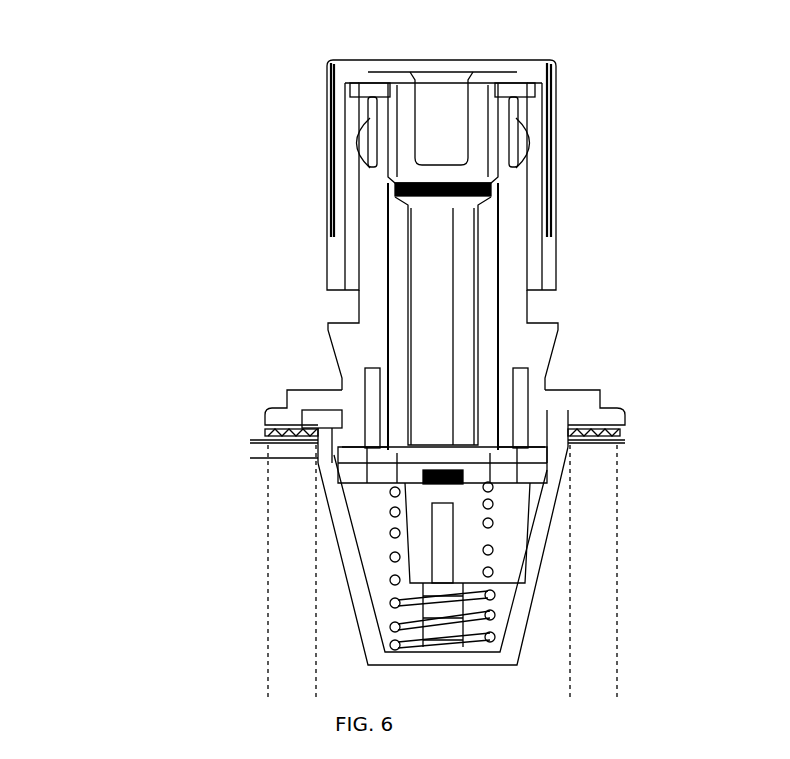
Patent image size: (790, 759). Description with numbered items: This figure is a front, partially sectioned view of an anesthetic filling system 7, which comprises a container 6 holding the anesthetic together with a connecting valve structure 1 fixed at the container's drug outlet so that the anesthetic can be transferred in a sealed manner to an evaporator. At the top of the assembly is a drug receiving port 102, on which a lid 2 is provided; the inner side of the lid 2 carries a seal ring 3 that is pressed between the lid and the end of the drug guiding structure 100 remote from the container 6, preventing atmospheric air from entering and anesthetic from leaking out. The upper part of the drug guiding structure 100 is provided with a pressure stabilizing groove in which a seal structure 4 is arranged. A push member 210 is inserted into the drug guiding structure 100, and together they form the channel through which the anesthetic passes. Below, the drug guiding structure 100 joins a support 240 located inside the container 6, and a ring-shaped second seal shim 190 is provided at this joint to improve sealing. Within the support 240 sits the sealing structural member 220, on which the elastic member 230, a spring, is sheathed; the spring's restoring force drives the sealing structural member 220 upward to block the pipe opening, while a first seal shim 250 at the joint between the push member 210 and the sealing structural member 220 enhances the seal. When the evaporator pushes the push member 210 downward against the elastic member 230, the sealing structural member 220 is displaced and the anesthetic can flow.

The connecting valve structure 1 is at (222, 395).
The lid 2 is at (352, 70).
The seal ring 3 is at (372, 92).
The seal structure 4 is at (358, 143).
The container 6 is at (288, 493).
The anesthetic filling system 7 is at (74, 358).
The drug guiding structure 100 is at (373, 301).
The drug receiving port 102 is at (440, 70).
The second seal shim 190 is at (290, 439).
The push member 210 is at (400, 266).
The sealing structural member 220 is at (415, 532).
The elastic member 230 is at (396, 628).
The support 240 is at (355, 575).
The first seal shim 250 is at (382, 458).